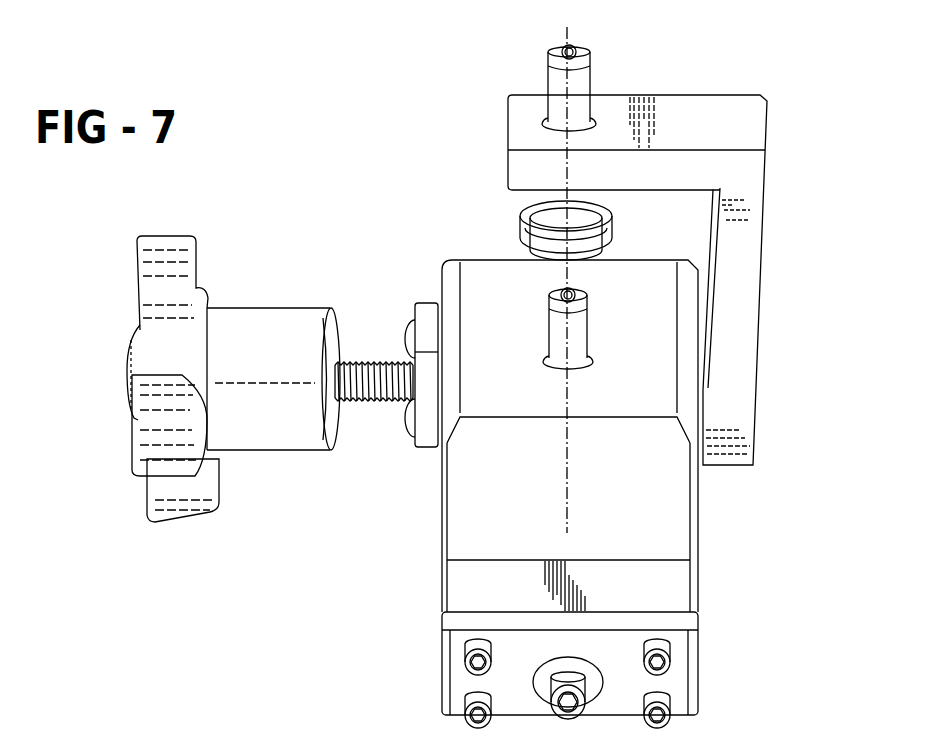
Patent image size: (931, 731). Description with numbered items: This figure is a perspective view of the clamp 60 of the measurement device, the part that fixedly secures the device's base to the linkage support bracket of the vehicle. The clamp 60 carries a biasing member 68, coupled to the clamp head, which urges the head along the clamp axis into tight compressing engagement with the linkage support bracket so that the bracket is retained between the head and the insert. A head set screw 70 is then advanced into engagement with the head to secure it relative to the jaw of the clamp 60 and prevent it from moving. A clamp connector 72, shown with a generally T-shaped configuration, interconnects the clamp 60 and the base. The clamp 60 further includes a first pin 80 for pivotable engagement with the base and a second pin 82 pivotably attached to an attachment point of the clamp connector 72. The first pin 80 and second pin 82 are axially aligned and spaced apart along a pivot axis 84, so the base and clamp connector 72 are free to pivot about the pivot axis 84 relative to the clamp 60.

The clamp 60 is at (665, 513).
The biasing member 68 is at (547, 221).
The head set screw 70 is at (262, 424).
The clamp connector 72 is at (742, 300).
The first pin 80 is at (577, 87).
The second pin 82 is at (577, 337).
The pivot axis 84 is at (567, 490).